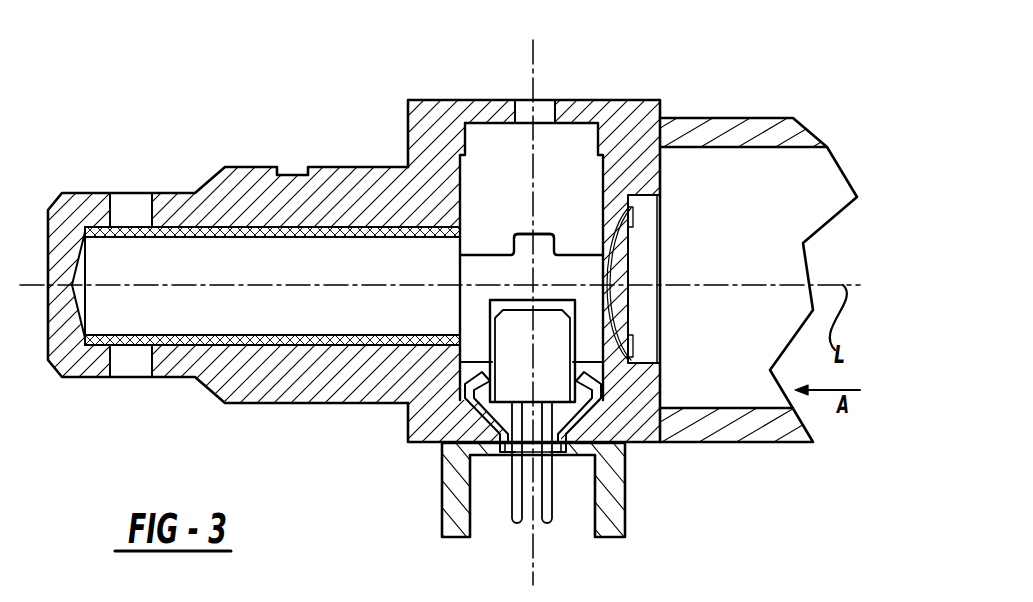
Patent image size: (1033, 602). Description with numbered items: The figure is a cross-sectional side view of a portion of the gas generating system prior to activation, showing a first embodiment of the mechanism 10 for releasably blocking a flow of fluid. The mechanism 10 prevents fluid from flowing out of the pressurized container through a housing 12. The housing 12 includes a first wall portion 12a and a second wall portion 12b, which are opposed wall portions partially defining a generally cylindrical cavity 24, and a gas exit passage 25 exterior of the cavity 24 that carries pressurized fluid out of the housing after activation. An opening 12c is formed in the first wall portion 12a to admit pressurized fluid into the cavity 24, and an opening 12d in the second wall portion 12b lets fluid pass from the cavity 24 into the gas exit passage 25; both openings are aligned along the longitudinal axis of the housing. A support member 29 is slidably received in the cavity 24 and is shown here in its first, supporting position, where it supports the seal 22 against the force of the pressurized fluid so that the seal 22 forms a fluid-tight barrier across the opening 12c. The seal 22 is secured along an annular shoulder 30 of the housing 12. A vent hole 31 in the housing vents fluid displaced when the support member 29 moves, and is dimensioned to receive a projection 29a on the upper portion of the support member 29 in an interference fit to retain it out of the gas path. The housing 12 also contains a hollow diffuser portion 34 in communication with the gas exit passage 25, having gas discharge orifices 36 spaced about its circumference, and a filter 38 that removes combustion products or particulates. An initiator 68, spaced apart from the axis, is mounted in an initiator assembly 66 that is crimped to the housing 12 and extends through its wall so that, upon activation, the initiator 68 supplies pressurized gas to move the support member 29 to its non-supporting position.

The mechanism 10 is at (646, 70).
The housing 12 is at (407, 100).
The first wall portion 12a is at (612, 232).
The second wall portion 12b is at (462, 165).
The opening 12c is at (607, 320).
The opening 12d is at (457, 247).
The seal 22 is at (660, 253).
The cavity 24 is at (500, 183).
The gas exit passage 25 is at (170, 307).
The support member 29 is at (587, 342).
The projection 29a is at (550, 232).
The annular shoulder 30 is at (660, 340).
The vent hole 31 is at (543, 110).
The diffuser portion 34 is at (62, 350).
The gas discharge orifices 36 is at (130, 203).
The filter 38 is at (205, 337).
The initiator assembly 66 is at (632, 545).
The initiator 68 is at (512, 335).